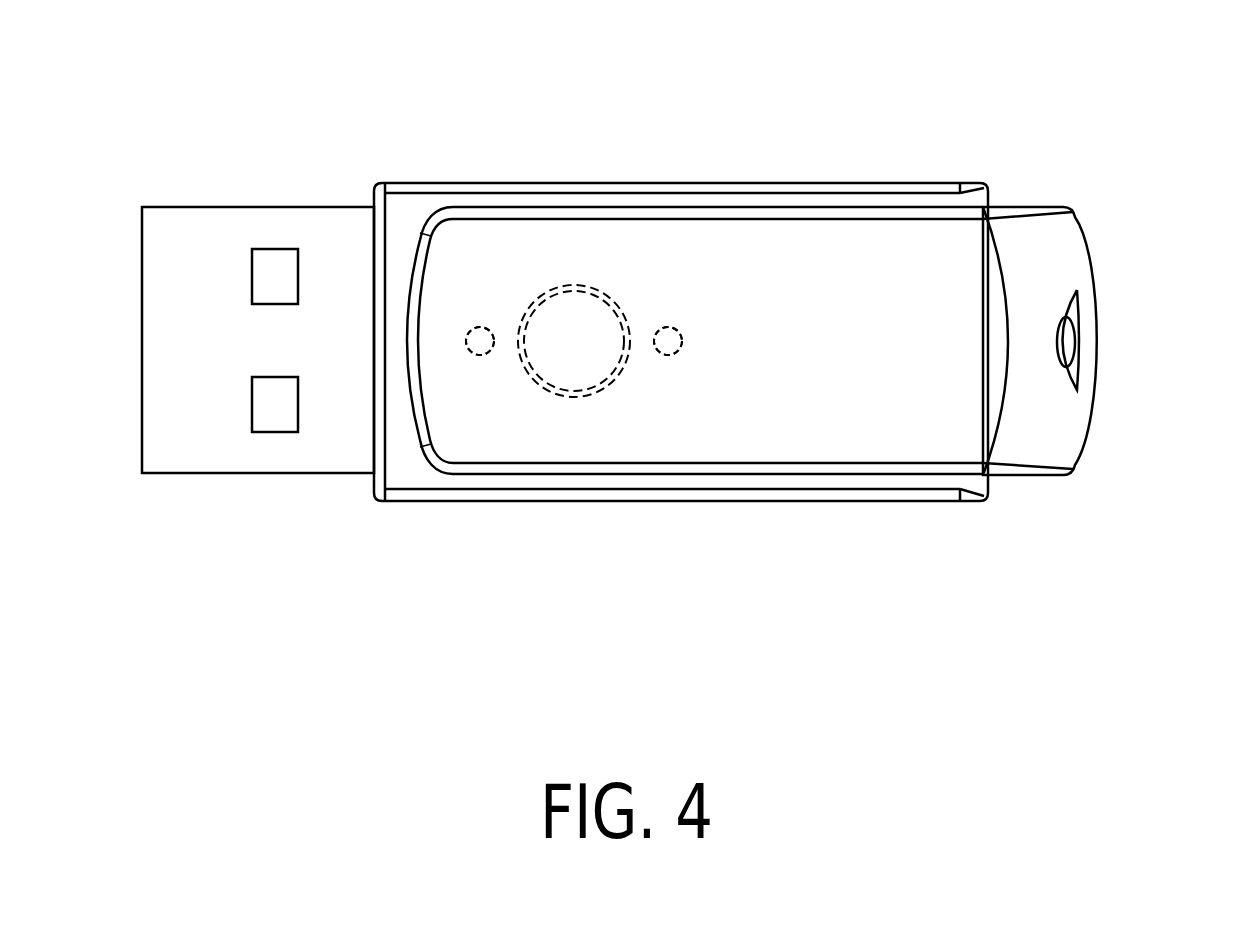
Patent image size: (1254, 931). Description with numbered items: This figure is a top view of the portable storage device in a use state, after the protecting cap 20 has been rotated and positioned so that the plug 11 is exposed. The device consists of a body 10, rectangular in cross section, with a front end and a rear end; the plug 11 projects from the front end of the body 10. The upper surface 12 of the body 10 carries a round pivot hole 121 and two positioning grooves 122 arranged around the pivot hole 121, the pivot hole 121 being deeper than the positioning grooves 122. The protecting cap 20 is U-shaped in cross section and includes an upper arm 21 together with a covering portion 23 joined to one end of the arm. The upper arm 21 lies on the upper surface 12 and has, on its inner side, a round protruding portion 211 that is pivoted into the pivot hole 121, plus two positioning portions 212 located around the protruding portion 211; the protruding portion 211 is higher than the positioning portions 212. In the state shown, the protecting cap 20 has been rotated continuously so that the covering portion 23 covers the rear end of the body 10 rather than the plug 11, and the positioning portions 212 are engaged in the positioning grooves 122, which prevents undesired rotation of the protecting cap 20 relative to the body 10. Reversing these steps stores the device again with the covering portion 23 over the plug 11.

The body 10 is at (900, 182).
The plug 11 is at (192, 220).
The upper surface 12 is at (407, 212).
The pivot hole 121 is at (574, 395).
The positioning grooves 122 is at (480, 355).
The protecting cap 20 is at (1035, 472).
The upper arm 21 is at (763, 277).
The protruding portion 211 is at (574, 315).
The positioning portions 212 is at (480, 327).
The covering portion 23 is at (1090, 312).